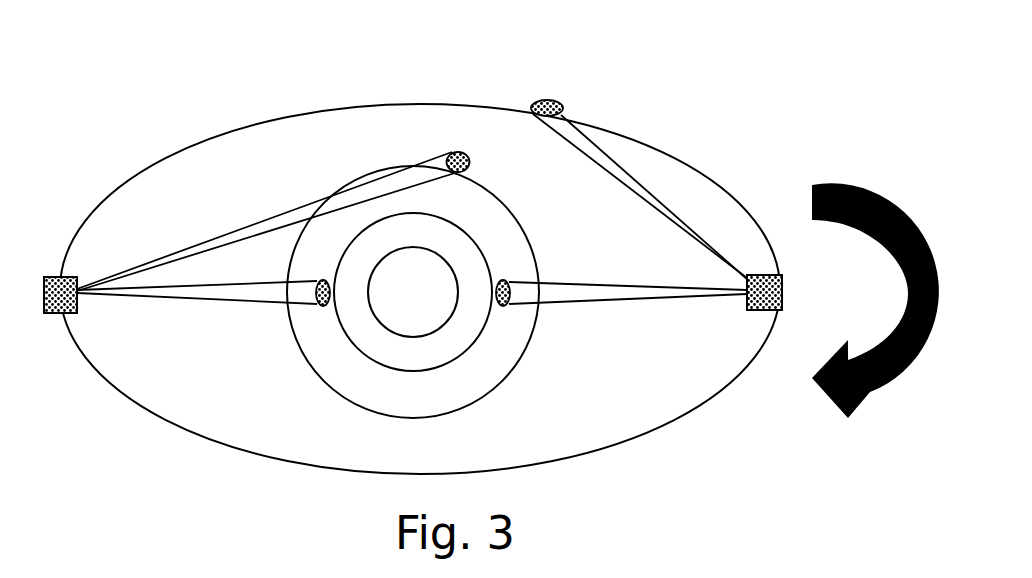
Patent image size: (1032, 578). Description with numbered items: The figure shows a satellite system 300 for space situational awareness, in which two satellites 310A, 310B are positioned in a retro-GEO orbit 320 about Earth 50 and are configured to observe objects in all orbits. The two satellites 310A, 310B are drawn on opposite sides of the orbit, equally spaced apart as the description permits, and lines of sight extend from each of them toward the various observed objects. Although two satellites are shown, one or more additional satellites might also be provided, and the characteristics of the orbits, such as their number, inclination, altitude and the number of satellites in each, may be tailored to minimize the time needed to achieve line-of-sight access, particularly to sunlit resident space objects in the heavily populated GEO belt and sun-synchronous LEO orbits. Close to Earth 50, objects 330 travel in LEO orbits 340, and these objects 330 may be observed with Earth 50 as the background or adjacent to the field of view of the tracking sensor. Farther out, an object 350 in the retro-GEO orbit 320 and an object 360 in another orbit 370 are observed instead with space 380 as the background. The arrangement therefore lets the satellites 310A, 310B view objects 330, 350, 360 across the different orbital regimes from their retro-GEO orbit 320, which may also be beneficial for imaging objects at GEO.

The satellite system 300 is at (183, 66).
The space 380 is at (362, 81).
The retro-GEO orbit 320 is at (580, 453).
The other orbit 370 is at (355, 406).
The LEO orbits 340 is at (473, 348).
The Earth 50 is at (428, 305).
The satellite 310A is at (55, 314).
The satellite 310B is at (769, 311).
The objects 330 is at (318, 302).
The object 360 is at (458, 151).
The object 350 is at (558, 101).